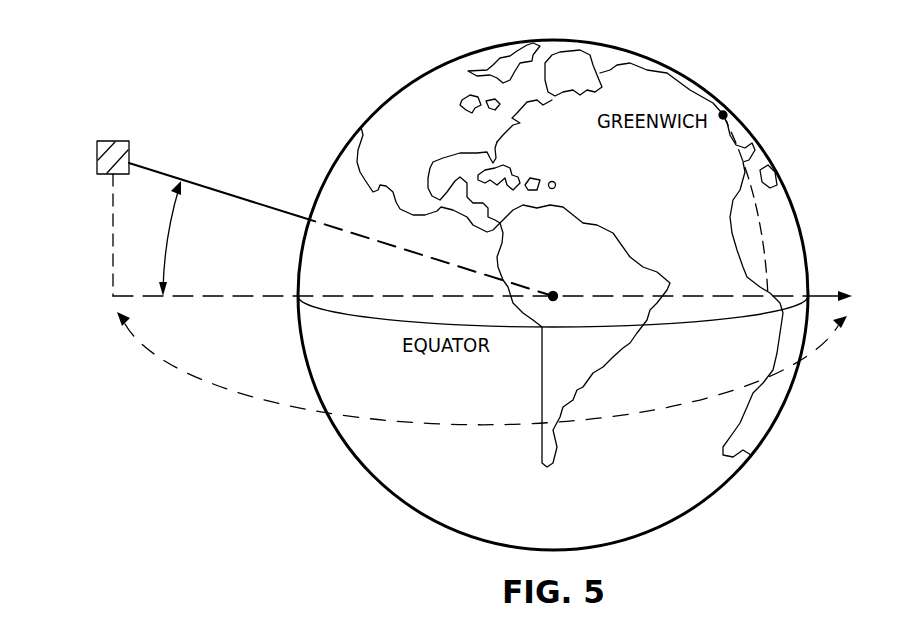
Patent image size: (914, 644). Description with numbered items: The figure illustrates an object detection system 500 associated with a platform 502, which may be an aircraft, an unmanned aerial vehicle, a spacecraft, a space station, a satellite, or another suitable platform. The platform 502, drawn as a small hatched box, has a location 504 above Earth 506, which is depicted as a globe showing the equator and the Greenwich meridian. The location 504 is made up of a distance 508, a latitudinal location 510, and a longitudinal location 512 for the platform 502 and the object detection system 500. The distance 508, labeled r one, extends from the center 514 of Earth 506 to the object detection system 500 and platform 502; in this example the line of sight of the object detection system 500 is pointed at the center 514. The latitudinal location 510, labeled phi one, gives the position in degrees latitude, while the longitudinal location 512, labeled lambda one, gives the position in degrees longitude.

The object detection system 500 is at (78, 126).
The platform 502 is at (117, 141).
The location 504 is at (88, 168).
The Earth 506 is at (398, 90).
The distance 508 is at (252, 200).
The latitudinal location 510 is at (170, 238).
The longitudinal location 512 is at (175, 362).
The center 514 is at (555, 290).